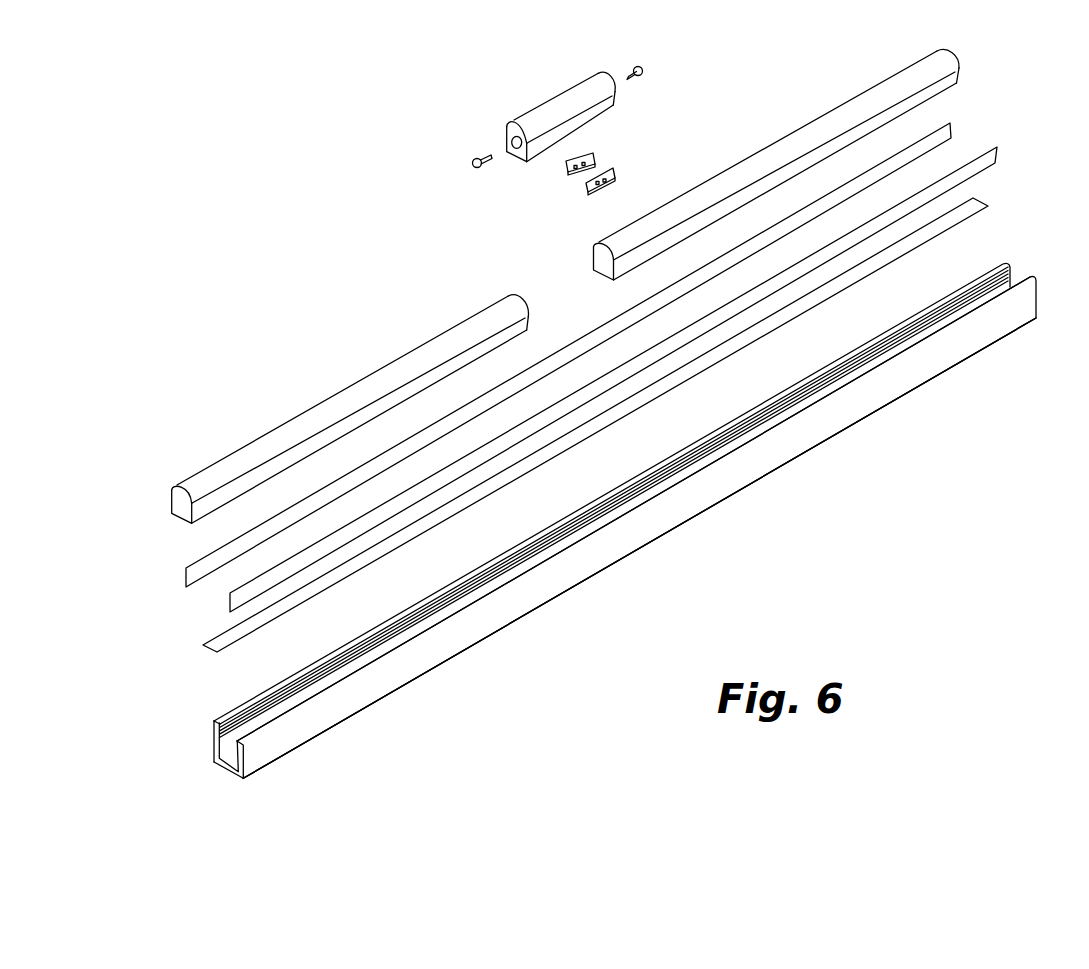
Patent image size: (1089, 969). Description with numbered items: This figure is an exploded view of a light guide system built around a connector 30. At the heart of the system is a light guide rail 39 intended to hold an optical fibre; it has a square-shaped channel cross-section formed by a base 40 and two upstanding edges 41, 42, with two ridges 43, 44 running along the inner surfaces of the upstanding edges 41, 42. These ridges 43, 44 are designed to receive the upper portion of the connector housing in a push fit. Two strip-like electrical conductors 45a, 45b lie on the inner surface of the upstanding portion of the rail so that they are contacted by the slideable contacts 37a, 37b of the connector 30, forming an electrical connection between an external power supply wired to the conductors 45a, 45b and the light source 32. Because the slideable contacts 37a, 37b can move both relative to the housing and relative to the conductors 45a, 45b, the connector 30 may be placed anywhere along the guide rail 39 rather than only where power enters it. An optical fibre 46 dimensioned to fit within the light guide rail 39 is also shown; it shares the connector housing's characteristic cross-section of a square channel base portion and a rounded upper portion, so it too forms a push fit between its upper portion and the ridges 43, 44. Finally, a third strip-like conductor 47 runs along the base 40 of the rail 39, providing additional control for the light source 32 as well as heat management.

The connector 30 is at (518, 76).
The light source 32 is at (641, 66).
The slideable contact 37a is at (617, 170).
The slideable contact 37b is at (565, 171).
The light guide rail 39 is at (555, 592).
The base 40 is at (233, 760).
The upstanding edge 41 is at (825, 368).
The upstanding edge 42 is at (875, 385).
The ridge 43 is at (218, 731).
The ridge 44 is at (242, 747).
The strip-like electrical conductor 45a is at (952, 131).
The strip-like electrical conductor 45b is at (996, 158).
The optical fibre 46 is at (251, 453).
The third strip-like conductor 47 is at (216, 649).